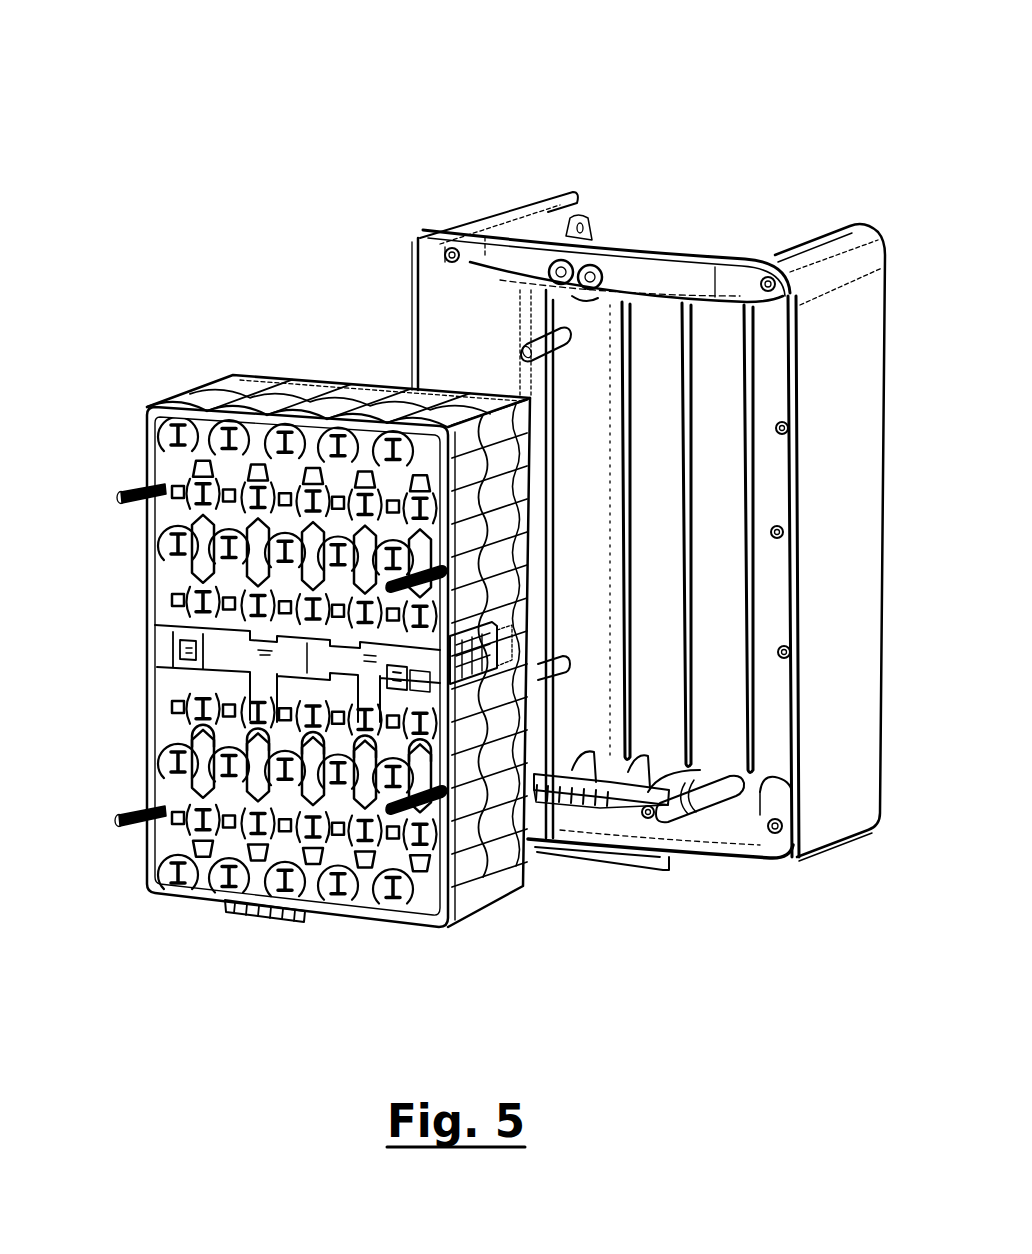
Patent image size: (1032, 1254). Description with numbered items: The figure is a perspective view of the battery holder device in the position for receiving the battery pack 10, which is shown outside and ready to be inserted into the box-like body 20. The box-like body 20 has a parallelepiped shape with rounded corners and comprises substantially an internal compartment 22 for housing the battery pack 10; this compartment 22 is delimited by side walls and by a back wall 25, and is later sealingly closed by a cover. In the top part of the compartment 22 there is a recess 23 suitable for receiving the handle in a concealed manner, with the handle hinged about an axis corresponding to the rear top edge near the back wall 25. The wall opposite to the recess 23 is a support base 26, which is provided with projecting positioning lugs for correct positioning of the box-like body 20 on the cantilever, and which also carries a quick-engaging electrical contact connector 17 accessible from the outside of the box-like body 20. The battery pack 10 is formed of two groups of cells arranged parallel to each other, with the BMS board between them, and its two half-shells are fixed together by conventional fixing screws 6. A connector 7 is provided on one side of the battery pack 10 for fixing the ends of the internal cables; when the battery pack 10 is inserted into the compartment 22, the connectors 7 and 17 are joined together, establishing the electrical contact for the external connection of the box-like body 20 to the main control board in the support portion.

The fixing screws 6 is at (120, 497).
The connector 7 is at (273, 917).
The battery pack 10 is at (292, 710).
The quick-engaging electrical contact connector 17 is at (613, 770).
The box-like body 20 is at (548, 548).
The internal compartment 22 is at (640, 435).
The recess 23 is at (772, 242).
The back wall 25 is at (612, 332).
The support base 26 is at (742, 815).